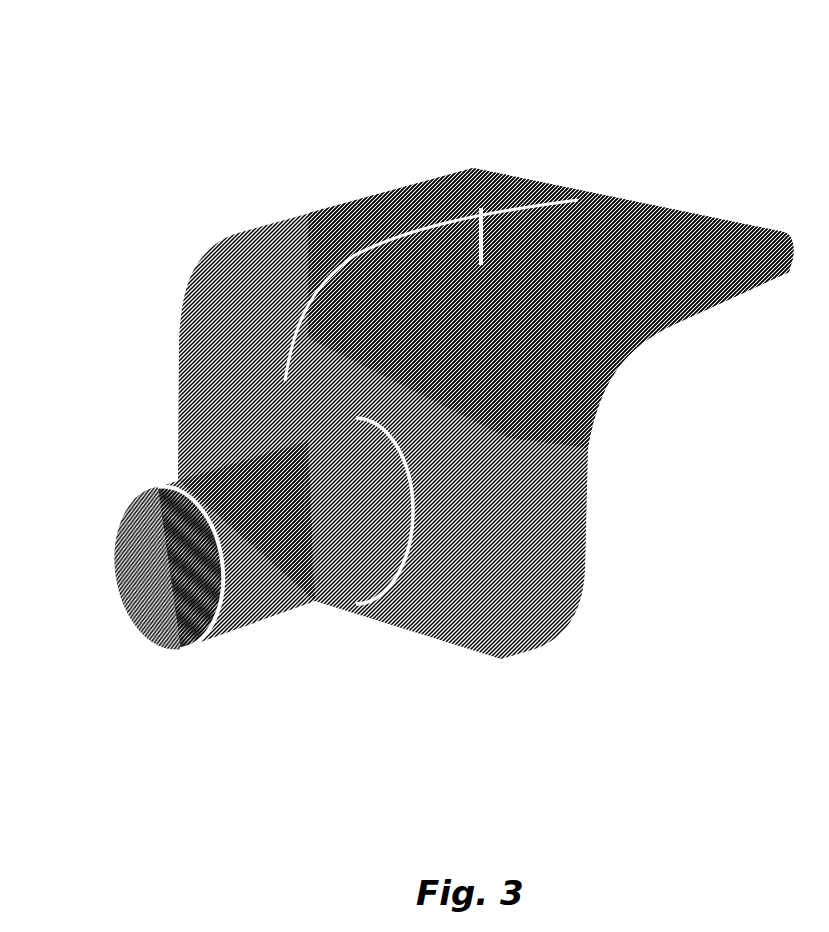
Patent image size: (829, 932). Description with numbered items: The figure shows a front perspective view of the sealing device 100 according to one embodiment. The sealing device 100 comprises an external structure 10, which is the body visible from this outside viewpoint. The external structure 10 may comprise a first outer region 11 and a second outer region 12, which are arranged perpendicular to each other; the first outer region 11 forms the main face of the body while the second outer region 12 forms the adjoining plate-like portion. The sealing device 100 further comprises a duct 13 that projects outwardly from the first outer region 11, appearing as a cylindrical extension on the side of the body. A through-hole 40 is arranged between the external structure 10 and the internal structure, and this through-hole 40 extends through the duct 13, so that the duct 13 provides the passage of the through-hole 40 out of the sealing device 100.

The sealing device 100 is at (418, 371).
The external structure 10 is at (418, 425).
The first outer region 11 is at (528, 490).
The second outer region 12 is at (672, 302).
The duct 13 is at (278, 572).
The through-hole 40 is at (162, 562).